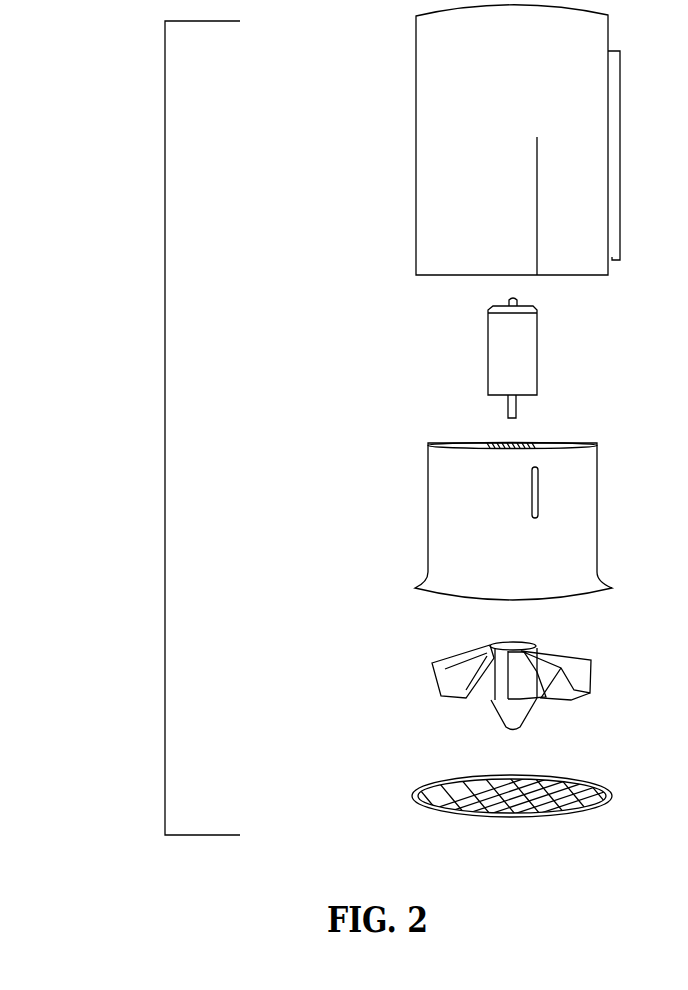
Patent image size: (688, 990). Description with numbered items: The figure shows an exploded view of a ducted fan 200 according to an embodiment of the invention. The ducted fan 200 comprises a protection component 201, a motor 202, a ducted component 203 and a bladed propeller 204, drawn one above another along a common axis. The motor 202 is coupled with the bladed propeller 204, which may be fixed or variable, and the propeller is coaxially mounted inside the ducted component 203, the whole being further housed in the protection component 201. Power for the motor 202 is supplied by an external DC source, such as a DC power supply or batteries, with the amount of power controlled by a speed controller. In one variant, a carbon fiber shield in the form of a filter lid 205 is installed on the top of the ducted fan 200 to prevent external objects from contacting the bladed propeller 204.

The ducted fan 200 is at (165, 387).
The protection component 201 is at (358, 160).
The motor 202 is at (358, 353).
The ducted component 203 is at (358, 508).
The bladed propeller 204 is at (358, 666).
The filter lid 205 is at (358, 797).